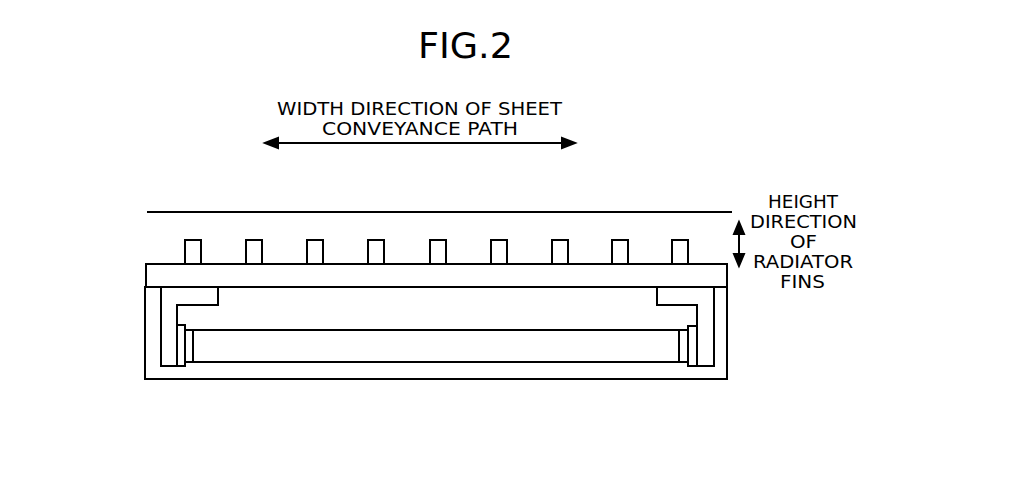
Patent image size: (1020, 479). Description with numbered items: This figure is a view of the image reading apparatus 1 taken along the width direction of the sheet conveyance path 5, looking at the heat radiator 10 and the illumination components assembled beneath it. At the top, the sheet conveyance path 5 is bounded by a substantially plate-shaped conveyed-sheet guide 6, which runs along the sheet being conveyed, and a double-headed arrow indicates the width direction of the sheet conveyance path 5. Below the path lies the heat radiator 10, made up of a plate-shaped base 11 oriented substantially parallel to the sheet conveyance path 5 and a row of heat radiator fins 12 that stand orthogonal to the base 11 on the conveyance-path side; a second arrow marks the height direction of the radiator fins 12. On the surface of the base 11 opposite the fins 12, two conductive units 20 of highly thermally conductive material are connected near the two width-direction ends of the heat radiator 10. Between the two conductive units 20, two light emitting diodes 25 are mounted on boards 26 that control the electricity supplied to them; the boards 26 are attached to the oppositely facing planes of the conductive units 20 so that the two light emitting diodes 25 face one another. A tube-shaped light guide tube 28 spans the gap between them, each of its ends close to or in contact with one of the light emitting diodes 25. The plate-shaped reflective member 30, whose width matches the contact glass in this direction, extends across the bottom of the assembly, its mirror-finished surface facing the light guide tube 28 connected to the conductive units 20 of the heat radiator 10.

The image reading apparatus 1 is at (169, 180).
The sheet conveyance path 5 is at (460, 233).
The conveyed-sheet guide 6 is at (359, 212).
The heat radiator 10 is at (397, 253).
The base 11 is at (147, 277).
The heat radiator fin 12 is at (183, 257).
The conductive unit 20 is at (160, 323).
The light emitting diode 25 is at (189, 363).
The board 26 is at (182, 366).
The light guide tube 28 is at (398, 363).
The reflective member 30 is at (537, 379).